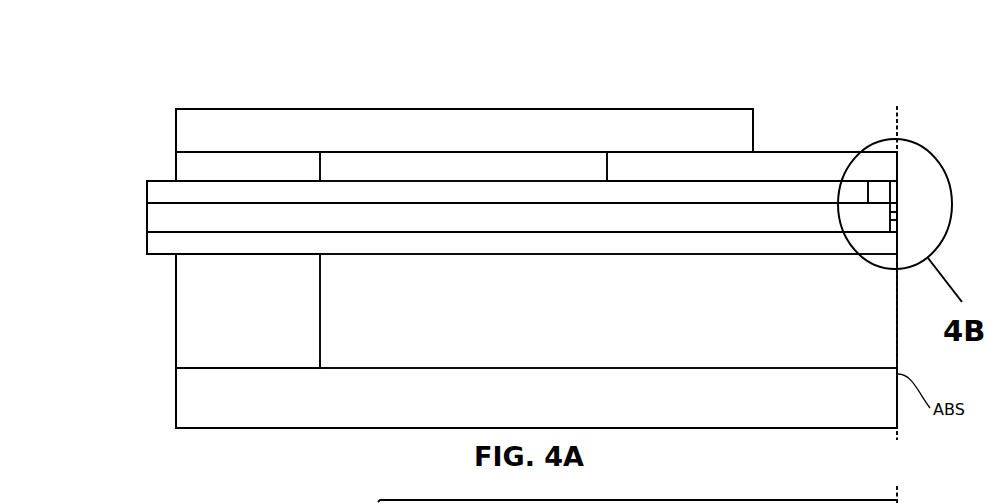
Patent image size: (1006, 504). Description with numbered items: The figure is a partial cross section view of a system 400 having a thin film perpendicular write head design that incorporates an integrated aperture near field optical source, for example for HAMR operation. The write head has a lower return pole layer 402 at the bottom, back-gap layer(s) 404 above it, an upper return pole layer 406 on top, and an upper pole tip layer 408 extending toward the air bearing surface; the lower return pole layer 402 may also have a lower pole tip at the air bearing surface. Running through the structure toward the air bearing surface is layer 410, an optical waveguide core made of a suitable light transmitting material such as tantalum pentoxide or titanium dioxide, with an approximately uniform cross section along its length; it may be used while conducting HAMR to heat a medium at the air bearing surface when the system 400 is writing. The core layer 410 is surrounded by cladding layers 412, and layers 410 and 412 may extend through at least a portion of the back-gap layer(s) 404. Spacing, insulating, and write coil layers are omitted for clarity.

The system 400 is at (116, 72).
The lower return pole layer 402 is at (520, 406).
The back-gap layer 404 is at (231, 176).
The upper return pole layer 406 is at (443, 140).
The upper pole tip layer 408 is at (738, 176).
The optical waveguide core 410 is at (443, 226).
The cladding layers 412 is at (162, 190).